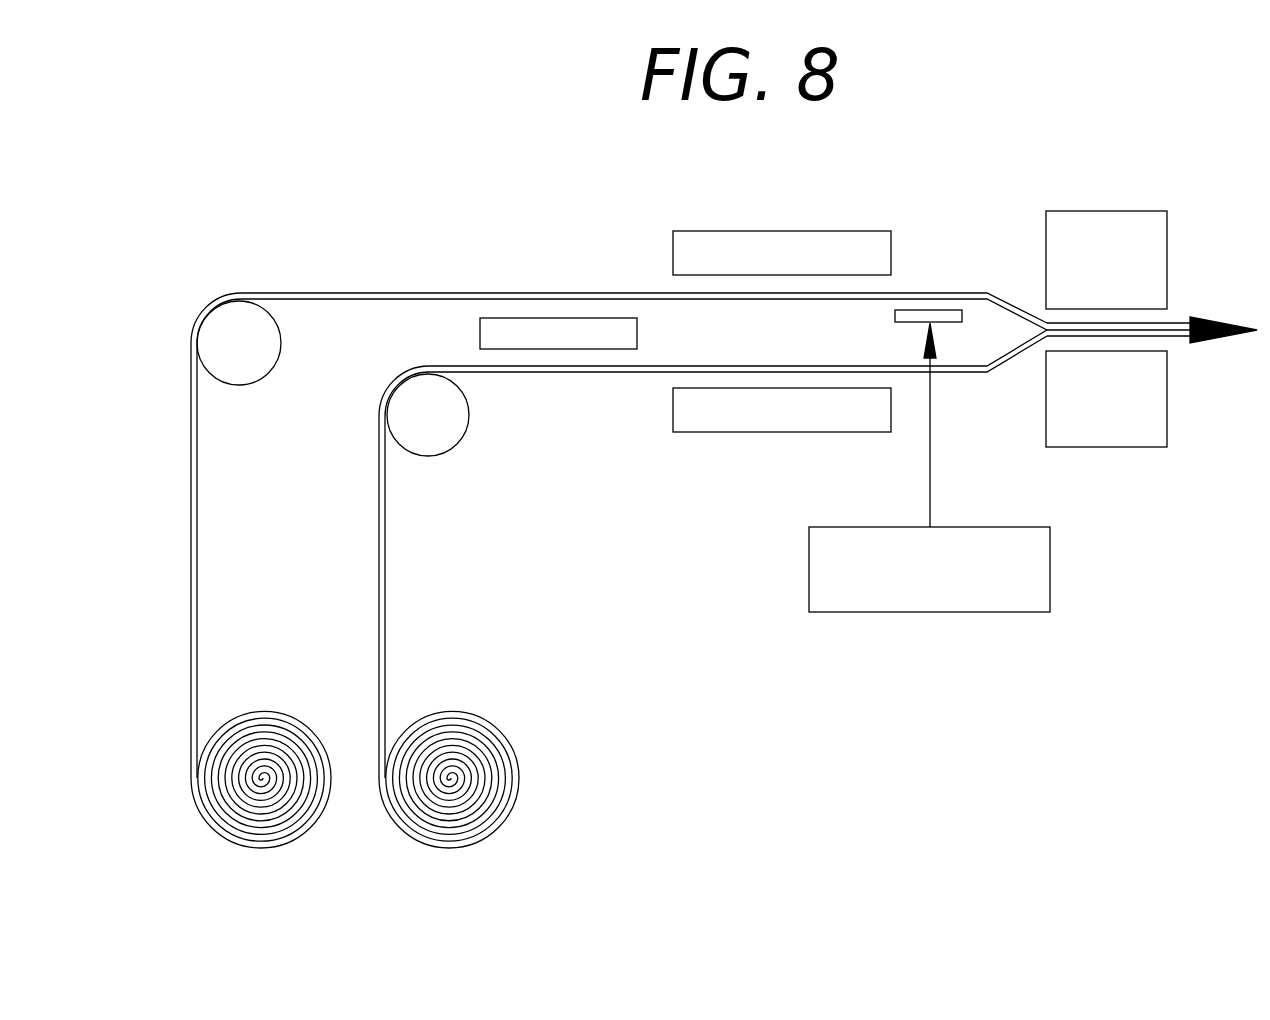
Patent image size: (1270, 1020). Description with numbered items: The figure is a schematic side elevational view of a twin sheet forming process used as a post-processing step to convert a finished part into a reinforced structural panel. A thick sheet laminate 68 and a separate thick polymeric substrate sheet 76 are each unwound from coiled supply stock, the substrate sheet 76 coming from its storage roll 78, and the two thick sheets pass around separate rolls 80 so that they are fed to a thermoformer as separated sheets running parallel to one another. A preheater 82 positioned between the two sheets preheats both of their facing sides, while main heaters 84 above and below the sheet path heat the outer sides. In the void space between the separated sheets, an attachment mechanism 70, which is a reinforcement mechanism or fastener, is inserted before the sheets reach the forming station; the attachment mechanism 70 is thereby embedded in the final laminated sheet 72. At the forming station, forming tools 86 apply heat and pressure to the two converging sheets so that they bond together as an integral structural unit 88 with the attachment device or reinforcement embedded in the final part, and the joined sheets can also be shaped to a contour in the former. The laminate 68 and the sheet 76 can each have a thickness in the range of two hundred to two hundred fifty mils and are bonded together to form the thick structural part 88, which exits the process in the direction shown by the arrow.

The finished laminate 68 is at (198, 600).
The attachment mechanism 70 is at (998, 527).
The final laminated sheet 72 is at (307, 798).
The thick polymeric substrate sheet 76 is at (386, 600).
The storage roll 78 is at (493, 798).
The rolls 80 is at (265, 345).
The preheater 82 is at (572, 318).
The main heaters 84 is at (840, 231).
The forming tools 86 is at (1105, 211).
The integral structural unit 88 is at (1178, 327).